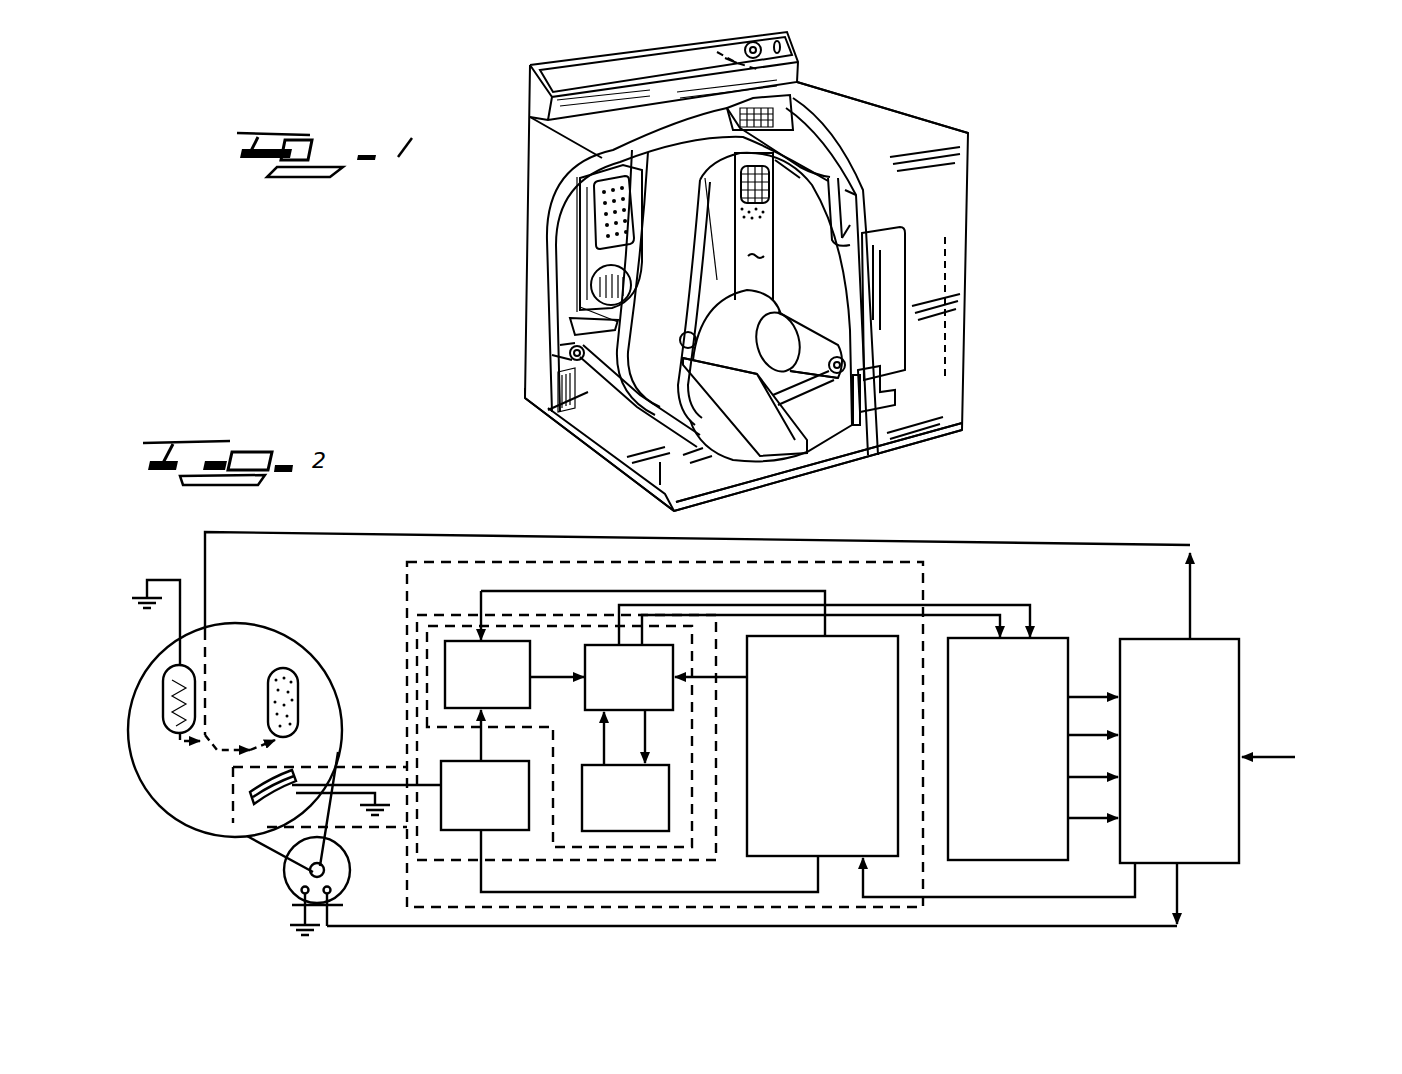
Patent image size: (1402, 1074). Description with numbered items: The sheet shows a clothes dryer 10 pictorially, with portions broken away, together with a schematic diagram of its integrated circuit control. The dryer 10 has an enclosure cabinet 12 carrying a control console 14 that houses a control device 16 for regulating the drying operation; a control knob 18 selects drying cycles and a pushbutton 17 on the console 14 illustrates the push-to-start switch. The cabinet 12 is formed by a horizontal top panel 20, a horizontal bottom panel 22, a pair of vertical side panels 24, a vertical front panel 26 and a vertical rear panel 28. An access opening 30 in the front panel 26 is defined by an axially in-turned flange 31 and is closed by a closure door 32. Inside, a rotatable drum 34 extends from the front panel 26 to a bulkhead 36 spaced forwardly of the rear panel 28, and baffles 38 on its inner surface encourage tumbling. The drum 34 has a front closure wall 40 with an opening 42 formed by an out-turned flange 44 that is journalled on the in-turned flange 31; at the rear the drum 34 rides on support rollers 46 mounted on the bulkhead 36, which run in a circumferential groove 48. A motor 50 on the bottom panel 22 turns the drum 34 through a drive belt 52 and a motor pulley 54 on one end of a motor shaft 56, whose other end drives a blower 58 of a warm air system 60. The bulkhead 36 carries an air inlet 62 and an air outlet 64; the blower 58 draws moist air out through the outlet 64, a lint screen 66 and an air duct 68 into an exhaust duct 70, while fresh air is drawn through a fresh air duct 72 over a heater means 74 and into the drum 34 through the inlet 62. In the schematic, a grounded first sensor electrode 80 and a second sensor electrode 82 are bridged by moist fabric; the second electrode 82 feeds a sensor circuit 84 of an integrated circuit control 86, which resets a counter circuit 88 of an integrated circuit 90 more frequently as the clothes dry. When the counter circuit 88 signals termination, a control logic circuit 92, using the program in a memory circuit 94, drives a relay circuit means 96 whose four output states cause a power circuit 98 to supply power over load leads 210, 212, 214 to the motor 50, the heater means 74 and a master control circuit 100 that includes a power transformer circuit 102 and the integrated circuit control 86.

In FIG. 1, the dryer 10 is at (976, 163).
In FIG. 1, the enclosure cabinet 12 is at (974, 335).
In FIG. 1, the control console 14 is at (806, 50).
In FIG. 1, the control device 16 is at (705, 43).
In FIG. 2, the control device 16 is at (210, 750).
In FIG. 1, the pushbutton 17 is at (783, 47).
In FIG. 1, the control knob 18 is at (745, 40).
In FIG. 2, the control knob 18 is at (247, 800).
In FIG. 1, the top panel 20 is at (922, 130).
In FIG. 1, the bottom panel 22 is at (640, 468).
In FIG. 1, the side panels 24 is at (813, 127).
In FIG. 1, the front panel 26 is at (917, 430).
In FIG. 1, the rear panel 28 is at (548, 332).
In FIG. 1, the access opening 30 is at (870, 340).
In FIG. 1, the in-turned flange 31 is at (893, 372).
In FIG. 1, the closure door 32 is at (892, 303).
In FIG. 1, the rotatable drum 34 is at (648, 408).
In FIG. 2, the rotatable drum 34 is at (128, 747).
In FIG. 1, the bulkhead 36 is at (583, 388).
In FIG. 1, the baffles 38 is at (742, 440).
In FIG. 1, the front closure wall 40 is at (858, 196).
In FIG. 1, the opening 42 is at (846, 292).
In FIG. 1, the out-turned flange 44 is at (850, 228).
In FIG. 1, the support rollers 46 is at (570, 350).
In FIG. 1, the circumferential groove 48 is at (568, 340).
In FIG. 1, the motor 50 is at (840, 414).
In FIG. 2, the motor 50 is at (290, 893).
In FIG. 1, the drive belt 52 is at (790, 395).
In FIG. 2, the drive belt 52 is at (262, 865).
In FIG. 1, the motor pulley 54 is at (760, 380).
In FIG. 2, the motor pulley 54 is at (348, 864).
In FIG. 1, the motor shaft 56 is at (838, 355).
In FIG. 1, the blower 58 is at (796, 343).
In FIG. 1, the warm air system 60 is at (778, 272).
In FIG. 1, the air inlet 62 is at (597, 222).
In FIG. 2, the air inlet 62 is at (163, 717).
In FIG. 1, the air outlet 64 is at (775, 220).
In FIG. 2, the air outlet 64 is at (298, 680).
In FIG. 1, the lint screen 66 is at (755, 170).
In FIG. 1, the air duct 68 is at (754, 226).
In FIG. 1, the exhaust duct 70 is at (680, 340).
In FIG. 1, the fresh air duct 72 is at (595, 250).
In FIG. 1, the heater means 74 is at (595, 300).
In FIG. 2, the heater means 74 is at (162, 687).
In FIG. 2, the first sensor electrode 80 is at (242, 835).
In FIG. 2, the second sensor electrode 82 is at (292, 775).
In FIG. 2, the sensor circuit 84 is at (463, 756).
In FIG. 2, the integrated circuit control 86 is at (435, 860).
In FIG. 2, the counter circuit 88 is at (444, 652).
In FIG. 2, the integrated circuit 90 is at (577, 849).
In FIG. 2, the control logic circuit 92 is at (580, 652).
In FIG. 2, the memory circuit 94 is at (592, 762).
In FIG. 2, the relay circuit means 96 is at (1060, 636).
In FIG. 2, the power circuit 98 is at (1207, 639).
In FIG. 2, the master control circuit 100 is at (923, 565).
In FIG. 2, the power transformer circuit 102 is at (857, 634).
In FIG. 2, the load lead 210 is at (1178, 892).
In FIG. 2, the load lead 212 is at (1193, 582).
In FIG. 2, the load lead 214 is at (1028, 897).